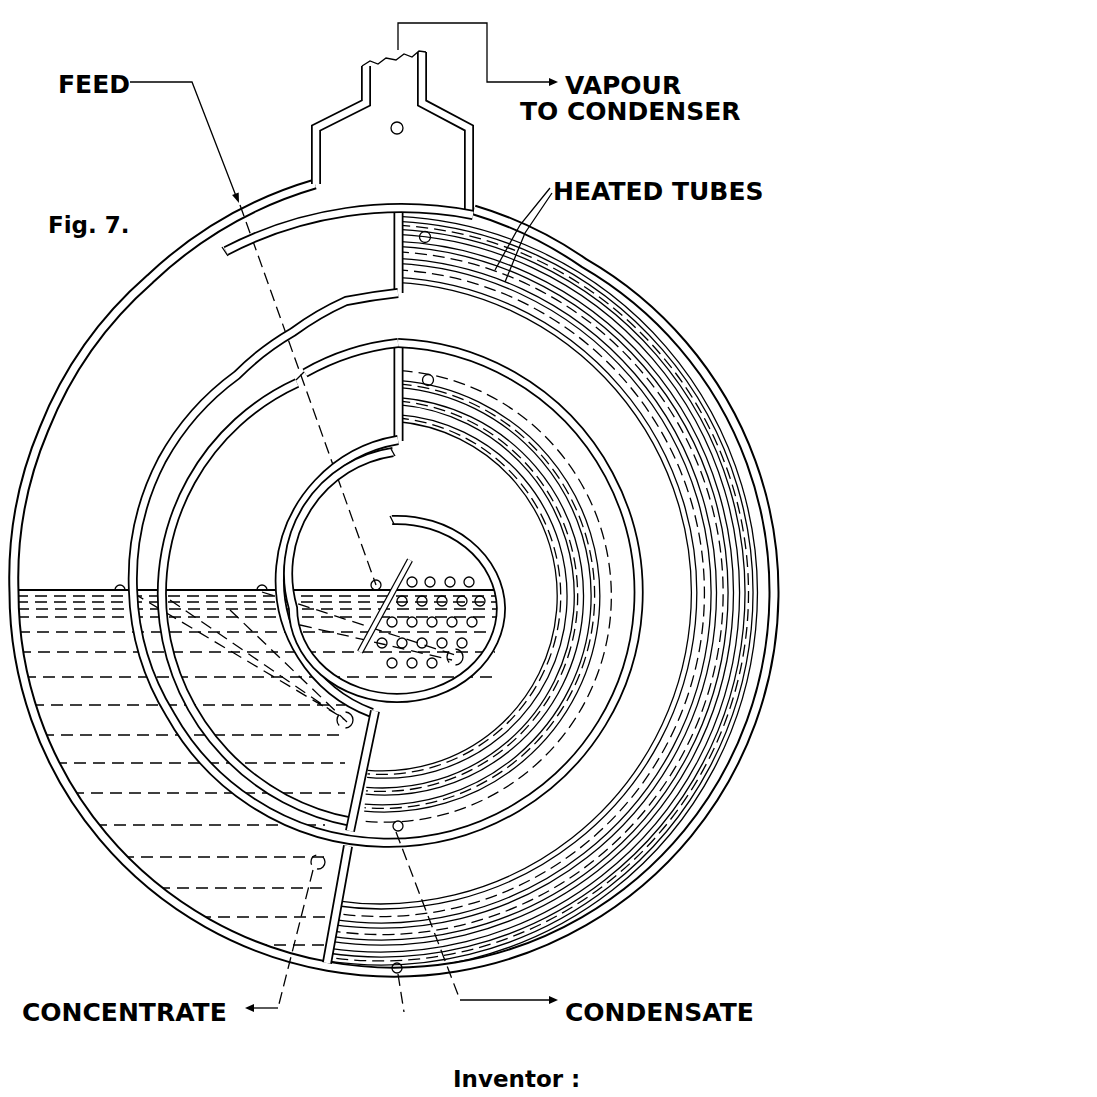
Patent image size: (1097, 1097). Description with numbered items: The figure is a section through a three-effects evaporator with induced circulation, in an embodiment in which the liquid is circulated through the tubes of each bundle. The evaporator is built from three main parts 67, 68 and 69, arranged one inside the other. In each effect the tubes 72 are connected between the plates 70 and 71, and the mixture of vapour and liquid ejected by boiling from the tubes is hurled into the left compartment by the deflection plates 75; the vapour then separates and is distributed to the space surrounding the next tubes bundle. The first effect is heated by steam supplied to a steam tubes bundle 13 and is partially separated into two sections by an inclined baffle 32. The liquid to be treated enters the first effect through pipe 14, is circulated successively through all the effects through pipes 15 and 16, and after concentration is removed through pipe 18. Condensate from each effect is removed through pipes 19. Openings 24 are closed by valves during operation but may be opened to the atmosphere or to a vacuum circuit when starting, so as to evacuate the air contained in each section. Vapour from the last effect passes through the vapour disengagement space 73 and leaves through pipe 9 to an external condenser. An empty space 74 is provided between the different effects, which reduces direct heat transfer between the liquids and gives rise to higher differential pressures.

The pipe 9 is at (364, 75).
The steam tubes bundle 13 is at (468, 578).
The pipe 14 is at (371, 582).
The pipe 15 is at (261, 585).
The pipe 16 is at (120, 585).
The pipe 18 is at (316, 864).
The pipe 19 is at (400, 973).
The opening 24 is at (422, 380).
The inclined baffle 32 is at (408, 561).
The main part 67 is at (447, 520).
The main part 68 is at (310, 483).
The main part 69 is at (213, 381).
The plate 70 is at (395, 402).
The plate 71 is at (348, 858).
The tubes 72 is at (730, 590).
The vapour disengagement space 73 is at (437, 187).
The empty space 74 is at (287, 508).
The deflection plate 75 is at (392, 528).